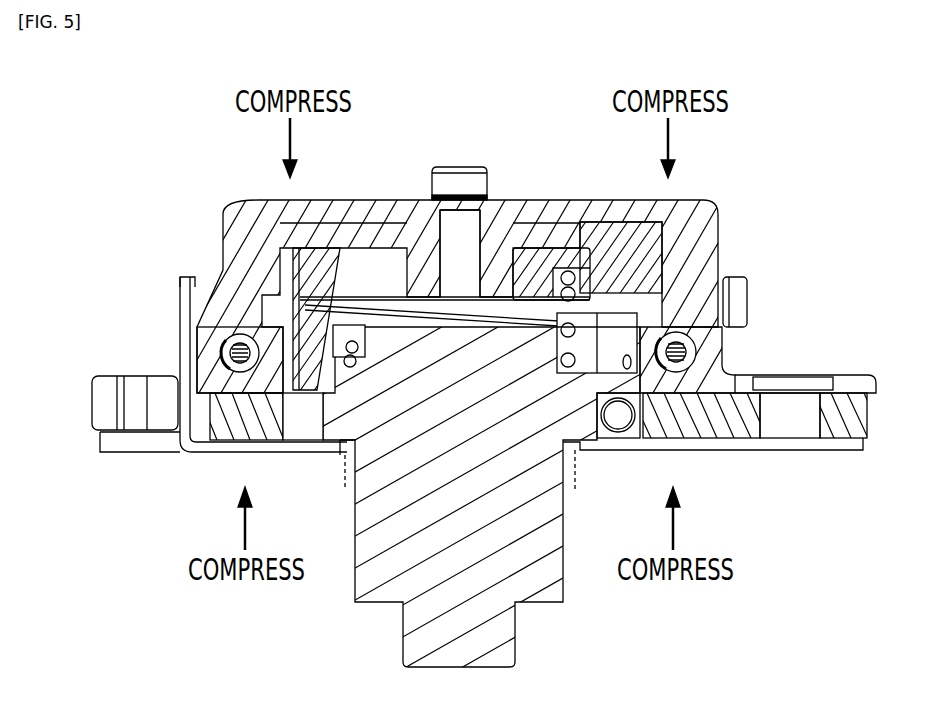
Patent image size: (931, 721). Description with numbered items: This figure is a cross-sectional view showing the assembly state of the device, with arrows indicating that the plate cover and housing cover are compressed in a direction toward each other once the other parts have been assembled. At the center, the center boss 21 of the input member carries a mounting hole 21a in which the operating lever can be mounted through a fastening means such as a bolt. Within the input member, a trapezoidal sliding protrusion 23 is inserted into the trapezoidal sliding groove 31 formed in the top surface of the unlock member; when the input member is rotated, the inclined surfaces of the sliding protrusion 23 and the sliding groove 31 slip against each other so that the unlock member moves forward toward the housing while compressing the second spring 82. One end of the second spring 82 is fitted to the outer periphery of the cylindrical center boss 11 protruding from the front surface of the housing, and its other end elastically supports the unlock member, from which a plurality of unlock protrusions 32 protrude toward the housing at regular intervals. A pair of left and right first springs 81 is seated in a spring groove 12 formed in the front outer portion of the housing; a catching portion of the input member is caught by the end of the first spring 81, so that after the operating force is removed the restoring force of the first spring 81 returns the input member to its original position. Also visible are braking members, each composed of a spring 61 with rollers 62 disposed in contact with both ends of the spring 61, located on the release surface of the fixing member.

The center boss 11 is at (698, 348).
The spring groove 12 is at (213, 330).
The center boss 21 is at (497, 212).
The mounting hole 21a is at (457, 232).
The sliding protrusion 23 is at (672, 263).
The sliding groove 31 is at (695, 294).
The unlock protrusion 32 is at (175, 393).
The spring 61 is at (613, 433).
The roller 62 is at (306, 410).
The first spring 81 is at (237, 353).
The second spring 82 is at (540, 290).